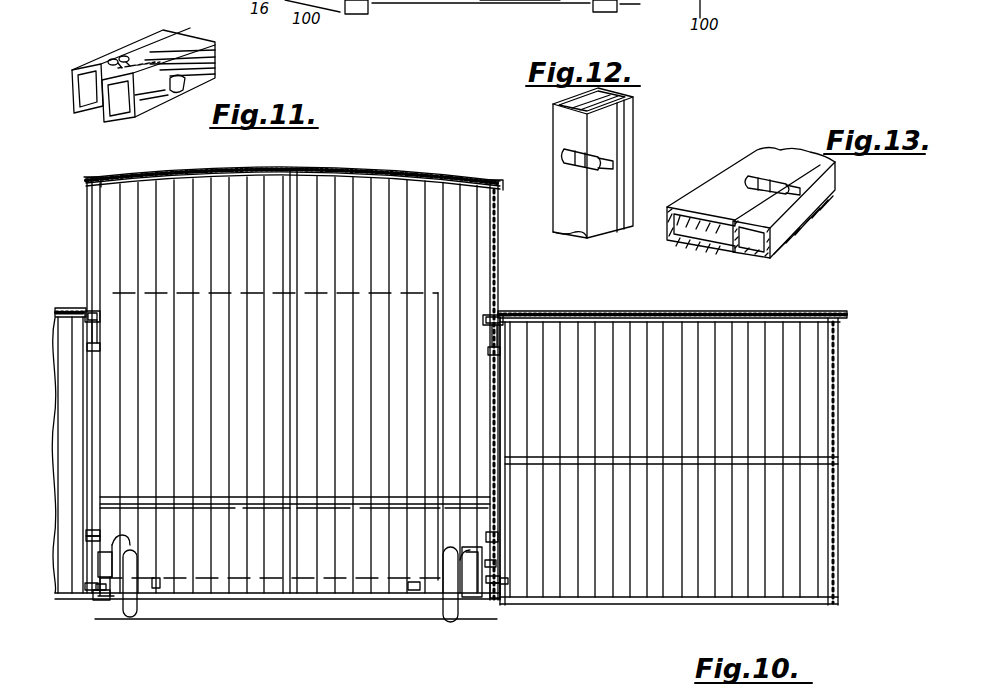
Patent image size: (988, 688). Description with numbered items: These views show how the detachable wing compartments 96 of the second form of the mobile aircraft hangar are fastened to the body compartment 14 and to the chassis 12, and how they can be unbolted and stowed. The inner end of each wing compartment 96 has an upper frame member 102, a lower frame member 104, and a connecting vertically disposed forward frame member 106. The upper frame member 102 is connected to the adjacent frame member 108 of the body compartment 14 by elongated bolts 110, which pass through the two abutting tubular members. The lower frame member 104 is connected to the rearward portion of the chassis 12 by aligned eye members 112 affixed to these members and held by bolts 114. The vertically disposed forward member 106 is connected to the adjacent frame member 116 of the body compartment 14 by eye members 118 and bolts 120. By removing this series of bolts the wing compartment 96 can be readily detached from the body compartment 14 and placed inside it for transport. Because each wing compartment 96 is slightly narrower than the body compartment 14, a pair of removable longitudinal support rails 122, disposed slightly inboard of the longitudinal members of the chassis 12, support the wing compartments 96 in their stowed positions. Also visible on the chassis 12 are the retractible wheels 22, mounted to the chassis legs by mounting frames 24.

In FIG. 10, the chassis 12 is at (116, 605).
In FIG. 13, the chassis 12 is at (735, 168).
In FIG. 10, the body compartment 14 is at (293, 393).
In FIG. 10, the retractible wheels 22 is at (137, 605).
In FIG. 10, the mounting frames 24 is at (130, 540).
In FIG. 10, the wing compartments 96 is at (438, 462).
In FIG. 10, the upper frame member 102 is at (90, 310).
In FIG. 11, the upper frame member 102 is at (210, 60).
In FIG. 10, the lower frame member 104 is at (90, 600).
In FIG. 13, the lower frame member 104 is at (800, 225).
In FIG. 10, the forward frame member 106 is at (87, 417).
In FIG. 12, the forward frame member 106 is at (630, 137).
In FIG. 10, the frame member 108 is at (98, 313).
In FIG. 11, the frame member 108 is at (105, 58).
In FIG. 10, the elongated bolts 110 is at (100, 312).
In FIG. 11, the elongated bolts 110 is at (143, 100).
In FIG. 10, the eye members 112 is at (88, 586).
In FIG. 13, the eye members 112 is at (778, 178).
In FIG. 10, the bolts 114 is at (88, 590).
In FIG. 13, the bolts 114 is at (800, 188).
In FIG. 10, the frame members 116 is at (488, 388).
In FIG. 12, the frame members 116 is at (570, 122).
In FIG. 10, the eye members 118 is at (93, 531).
In FIG. 12, the eye members 118 is at (595, 150).
In FIG. 10, the bolts 120 is at (88, 536).
In FIG. 12, the bolts 120 is at (612, 163).
In FIG. 10, the longitudinal support rails 122 is at (160, 600).